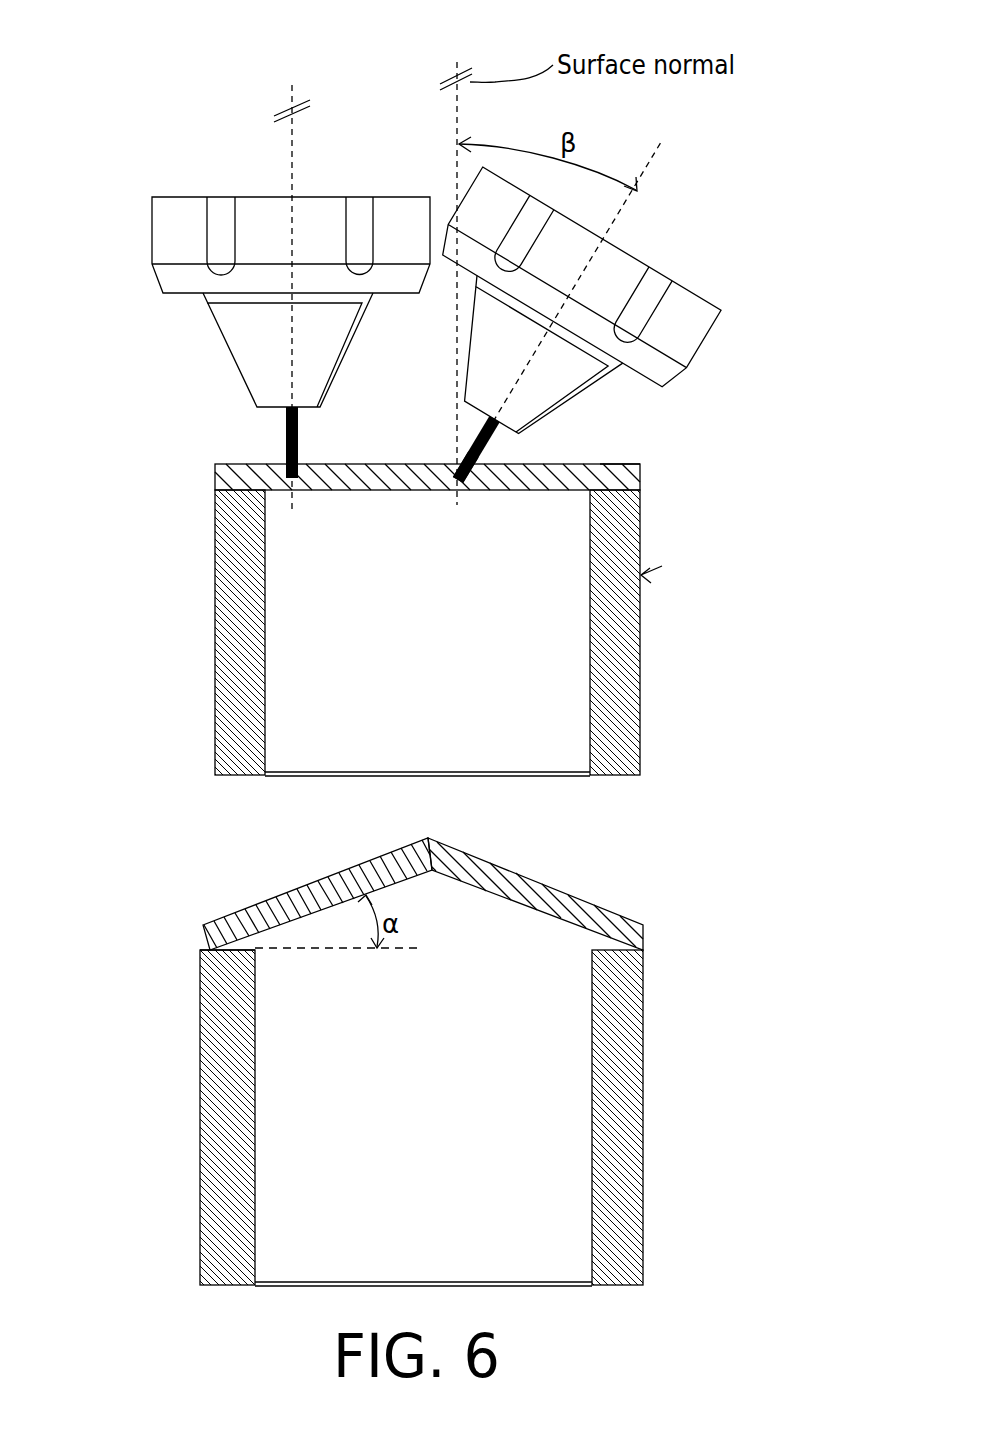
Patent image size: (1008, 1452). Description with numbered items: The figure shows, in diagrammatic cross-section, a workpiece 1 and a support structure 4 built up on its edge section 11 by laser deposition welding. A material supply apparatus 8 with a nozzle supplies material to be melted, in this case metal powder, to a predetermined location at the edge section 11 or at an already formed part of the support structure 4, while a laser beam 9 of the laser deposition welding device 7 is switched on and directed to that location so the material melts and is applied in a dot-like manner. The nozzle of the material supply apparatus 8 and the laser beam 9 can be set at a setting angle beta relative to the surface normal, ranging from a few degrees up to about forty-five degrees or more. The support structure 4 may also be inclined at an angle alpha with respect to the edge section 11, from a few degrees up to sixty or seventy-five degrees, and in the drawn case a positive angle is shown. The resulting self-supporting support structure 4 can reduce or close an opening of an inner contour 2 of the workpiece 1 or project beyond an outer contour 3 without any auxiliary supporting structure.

The workpiece 1 is at (414, 888).
The inner contour 2 is at (580, 642).
The outer contour 3 is at (655, 1080).
The support structure 4 is at (215, 490).
The laser deposition welding device 7 is at (270, 259).
The material supply apparatus 8 is at (241, 352).
The laser beam 9 is at (334, 432).
The edge section 11 is at (617, 464).